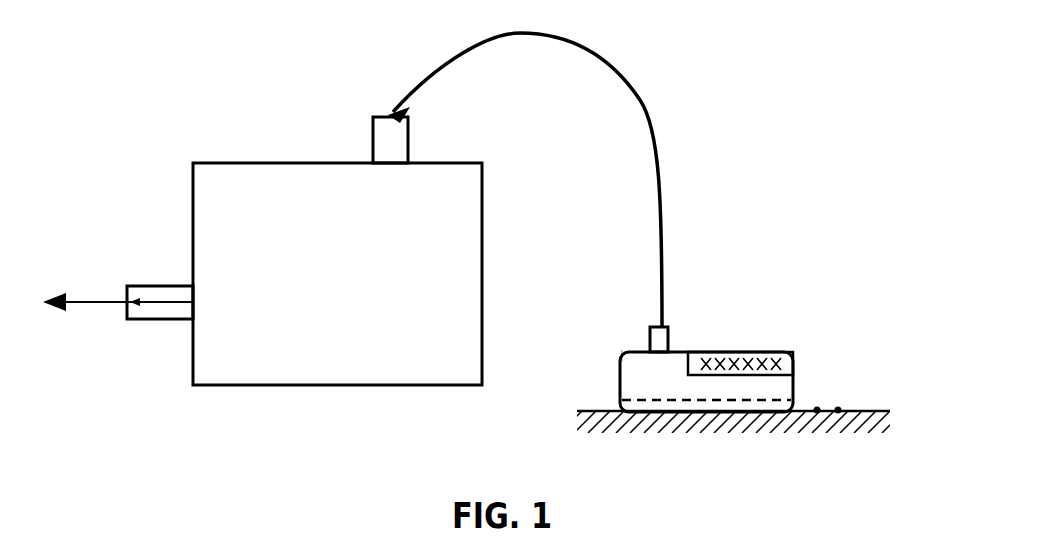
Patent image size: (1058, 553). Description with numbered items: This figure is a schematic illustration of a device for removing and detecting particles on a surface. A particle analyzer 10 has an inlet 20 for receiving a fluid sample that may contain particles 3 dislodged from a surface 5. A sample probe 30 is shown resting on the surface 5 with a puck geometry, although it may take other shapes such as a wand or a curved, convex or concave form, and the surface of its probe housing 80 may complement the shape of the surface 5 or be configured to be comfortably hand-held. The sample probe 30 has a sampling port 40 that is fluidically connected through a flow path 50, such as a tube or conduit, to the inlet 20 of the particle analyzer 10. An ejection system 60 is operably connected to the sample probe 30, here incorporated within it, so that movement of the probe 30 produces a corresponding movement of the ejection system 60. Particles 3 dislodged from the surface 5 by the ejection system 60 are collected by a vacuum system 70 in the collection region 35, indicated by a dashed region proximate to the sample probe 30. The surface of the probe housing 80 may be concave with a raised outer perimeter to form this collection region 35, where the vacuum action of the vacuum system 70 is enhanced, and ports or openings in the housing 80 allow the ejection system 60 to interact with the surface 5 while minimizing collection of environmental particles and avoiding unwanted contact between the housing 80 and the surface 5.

The particle analyzer 10 is at (207, 163).
The inlet 20 is at (381, 141).
The sample probe 30 is at (628, 388).
The collection region 35 is at (745, 405).
The sampling port 40 is at (668, 340).
The flow path 50 is at (620, 82).
The ejection system 60 is at (778, 352).
The vacuum system 70 is at (97, 302).
The probe housing 80 is at (620, 360).
The particles 3 is at (817, 410).
The surface 5 is at (850, 410).